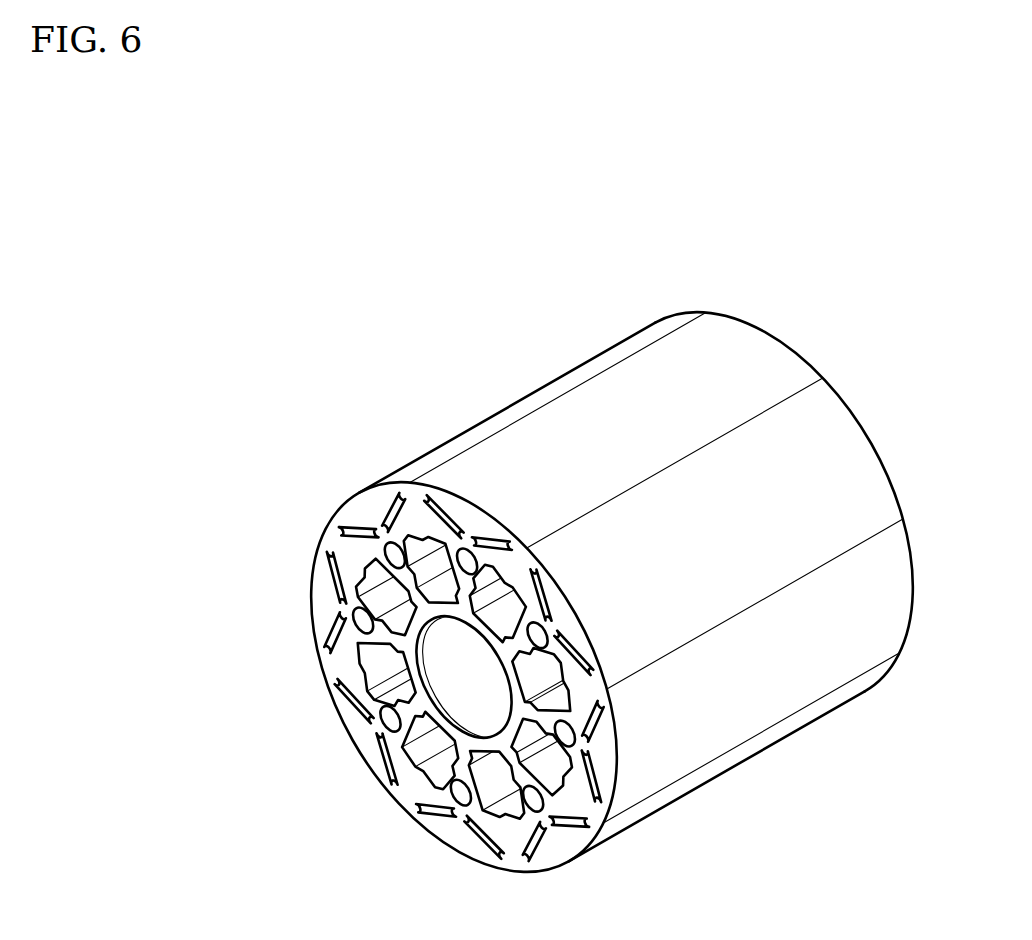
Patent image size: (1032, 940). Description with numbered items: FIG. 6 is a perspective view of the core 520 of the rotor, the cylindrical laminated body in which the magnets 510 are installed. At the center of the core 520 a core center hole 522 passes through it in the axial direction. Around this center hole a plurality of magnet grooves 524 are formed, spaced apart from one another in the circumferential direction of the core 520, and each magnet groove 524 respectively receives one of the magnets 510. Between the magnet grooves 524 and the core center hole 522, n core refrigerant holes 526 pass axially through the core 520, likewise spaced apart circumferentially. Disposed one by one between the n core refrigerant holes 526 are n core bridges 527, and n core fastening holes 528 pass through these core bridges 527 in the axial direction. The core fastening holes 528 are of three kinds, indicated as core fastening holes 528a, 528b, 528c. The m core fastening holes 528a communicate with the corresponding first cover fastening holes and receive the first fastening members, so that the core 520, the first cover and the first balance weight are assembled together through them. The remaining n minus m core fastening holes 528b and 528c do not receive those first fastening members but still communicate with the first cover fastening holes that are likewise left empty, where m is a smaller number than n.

The magnet 510 is at (322, 534).
The core 520 is at (593, 335).
The core center hole 522 is at (418, 668).
The magnet groove 524 is at (380, 508).
The core refrigerant hole 526 is at (402, 533).
The core bridge 527 is at (358, 617).
The core fastening hole 528 is at (517, 548).
The core fastening hole 528a is at (357, 586).
The core fastening hole 528b is at (372, 736).
The core fastening hole 528c is at (482, 535).